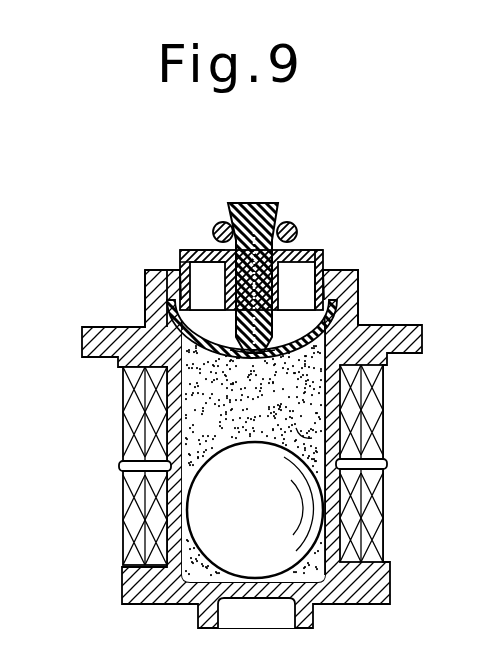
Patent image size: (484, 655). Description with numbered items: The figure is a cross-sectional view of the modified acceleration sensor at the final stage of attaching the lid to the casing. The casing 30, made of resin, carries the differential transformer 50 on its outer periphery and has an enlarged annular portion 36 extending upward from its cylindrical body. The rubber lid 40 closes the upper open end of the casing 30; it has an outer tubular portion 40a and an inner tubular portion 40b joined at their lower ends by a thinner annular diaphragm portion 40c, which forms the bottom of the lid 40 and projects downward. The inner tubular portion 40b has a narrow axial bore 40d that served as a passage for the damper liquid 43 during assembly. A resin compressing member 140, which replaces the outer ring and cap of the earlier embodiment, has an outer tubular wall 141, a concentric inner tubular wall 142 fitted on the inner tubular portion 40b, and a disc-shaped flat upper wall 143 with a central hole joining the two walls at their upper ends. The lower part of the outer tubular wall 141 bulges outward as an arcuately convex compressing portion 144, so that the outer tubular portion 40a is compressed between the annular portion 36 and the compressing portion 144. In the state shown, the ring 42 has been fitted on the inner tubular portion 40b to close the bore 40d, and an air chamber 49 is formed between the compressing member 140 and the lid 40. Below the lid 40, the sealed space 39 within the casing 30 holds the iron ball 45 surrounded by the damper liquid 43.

The casing 30 is at (88, 321).
The annular portion 36 is at (146, 287).
The sealed space 39 is at (330, 473).
The lid 40 is at (283, 361).
The outer tubular portion 40a is at (180, 255).
The inner tubular portion 40b is at (270, 212).
The annular diaphragm portion 40c is at (178, 375).
The axial bore 40d is at (243, 357).
The ring 42 is at (288, 226).
The damper liquid 43 is at (312, 438).
The iron ball 45 is at (305, 510).
The air chamber 49 is at (318, 247).
The differential transformer 50 is at (118, 420).
The compressing member 140 is at (330, 235).
The outer tubular wall 141 is at (324, 258).
The inner tubular wall 142 is at (208, 248).
The flat upper wall 143 is at (188, 248).
The compressing portion 144 is at (352, 293).